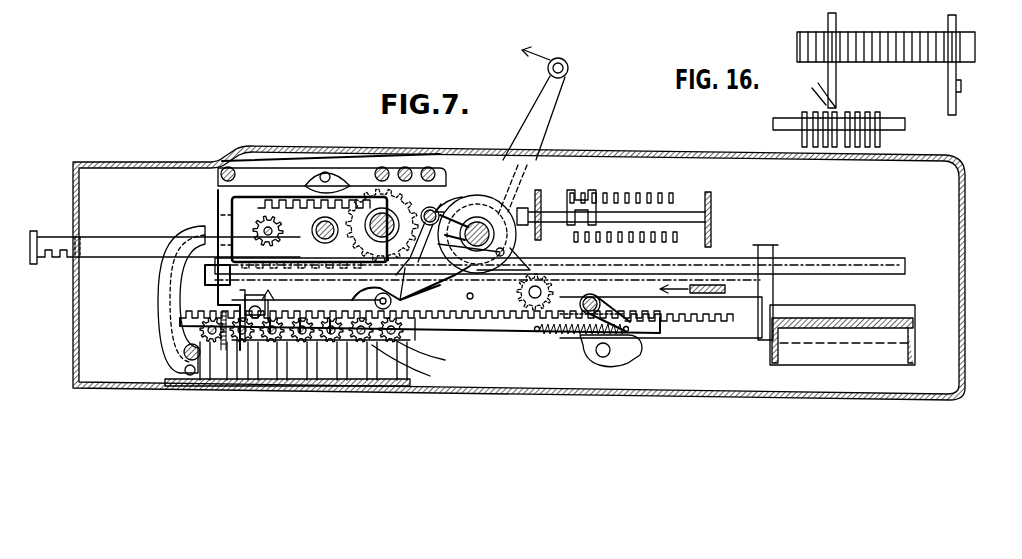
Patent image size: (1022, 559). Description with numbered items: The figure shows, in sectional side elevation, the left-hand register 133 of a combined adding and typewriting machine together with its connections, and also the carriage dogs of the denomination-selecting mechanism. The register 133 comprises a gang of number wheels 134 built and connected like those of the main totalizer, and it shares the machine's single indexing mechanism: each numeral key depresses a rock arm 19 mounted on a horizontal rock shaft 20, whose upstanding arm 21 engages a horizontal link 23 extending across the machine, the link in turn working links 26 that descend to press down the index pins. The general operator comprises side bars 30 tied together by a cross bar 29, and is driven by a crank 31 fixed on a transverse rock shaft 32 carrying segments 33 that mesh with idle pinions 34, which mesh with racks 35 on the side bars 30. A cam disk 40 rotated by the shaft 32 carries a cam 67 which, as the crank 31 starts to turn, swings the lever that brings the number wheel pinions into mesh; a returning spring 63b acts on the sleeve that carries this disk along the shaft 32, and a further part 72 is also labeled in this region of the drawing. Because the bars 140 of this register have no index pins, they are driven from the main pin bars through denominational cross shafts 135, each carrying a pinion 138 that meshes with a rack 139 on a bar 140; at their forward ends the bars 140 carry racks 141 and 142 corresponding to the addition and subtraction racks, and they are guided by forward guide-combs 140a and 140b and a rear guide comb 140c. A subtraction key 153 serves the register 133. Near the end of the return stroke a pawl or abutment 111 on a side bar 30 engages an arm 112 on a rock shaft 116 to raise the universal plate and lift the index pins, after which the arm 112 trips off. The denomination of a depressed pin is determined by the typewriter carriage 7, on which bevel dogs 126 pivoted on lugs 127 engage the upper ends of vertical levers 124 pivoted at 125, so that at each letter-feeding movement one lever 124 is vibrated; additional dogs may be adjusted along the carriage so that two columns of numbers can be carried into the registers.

In FIG. 16, the typewriter carriage 7 is at (960, 32).
In FIG. 7, the rock arm 19 is at (540, 206).
In FIG. 7, the rock shaft 20 is at (705, 215).
In FIG. 7, the upstanding arm 21 is at (581, 195).
In FIG. 7, the horizontal link 23 is at (640, 193).
In FIG. 7, the link 26 is at (660, 242).
In FIG. 7, the cross bar 29 is at (704, 295).
In FIG. 7, the side bar 30 is at (737, 331).
In FIG. 7, the crank 31 is at (535, 103).
In FIG. 7, the rock shaft 32 is at (480, 232).
In FIG. 7, the segment 33 is at (512, 330).
In FIG. 7, the idle pinion 34 is at (549, 292).
In FIG. 7, the rack 35 is at (672, 320).
In FIG. 7, the cam disk 40 is at (512, 186).
In FIG. 7, the returning spring 63b is at (465, 225).
In FIG. 7, the cam 67 is at (426, 253).
In FIG. 7, the lever 72 is at (465, 320).
In FIG. 7, the pawl or abutment 111 is at (618, 352).
In FIG. 7, the arm 112 is at (620, 318).
In FIG. 7, the rock shaft 116 is at (592, 298).
In FIG. 16, the vertical lever 124 is at (868, 112).
In FIG. 16, the pivot 125 is at (905, 125).
In FIG. 16, the bevel dog 126 is at (948, 92).
In FIG. 16, the lug 127 is at (950, 24).
In FIG. 7, the register 133 is at (181, 289).
In FIG. 7, the number wheel 134 is at (318, 218).
In FIG. 7, the cross shaft 135 is at (430, 355).
In FIG. 7, the pinion 138 is at (410, 365).
In FIG. 7, the rack 139 is at (429, 339).
In FIG. 7, the bar 140 is at (560, 269).
In FIG. 7, the forward guide-comb 140a is at (186, 344).
In FIG. 7, the forward guide-comb 140b is at (222, 176).
In FIG. 7, the rear guide comb 140c is at (773, 256).
In FIG. 7, the rack 141 is at (304, 270).
In FIG. 7, the rack 142 is at (330, 190).
In FIG. 7, the subtraction key 153 is at (165, 247).